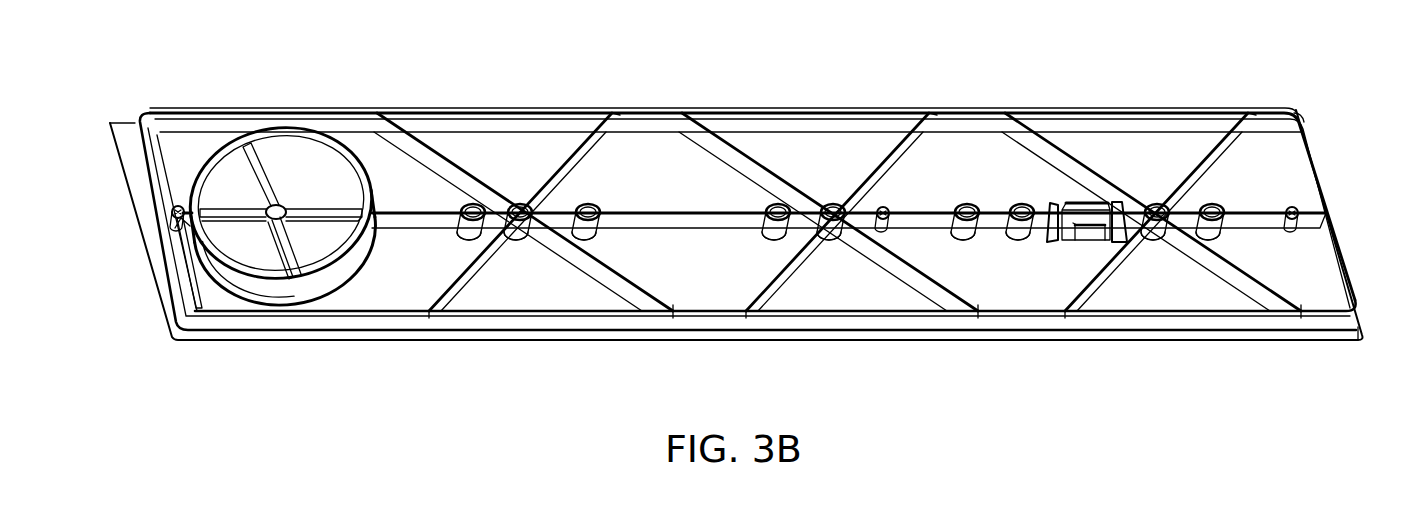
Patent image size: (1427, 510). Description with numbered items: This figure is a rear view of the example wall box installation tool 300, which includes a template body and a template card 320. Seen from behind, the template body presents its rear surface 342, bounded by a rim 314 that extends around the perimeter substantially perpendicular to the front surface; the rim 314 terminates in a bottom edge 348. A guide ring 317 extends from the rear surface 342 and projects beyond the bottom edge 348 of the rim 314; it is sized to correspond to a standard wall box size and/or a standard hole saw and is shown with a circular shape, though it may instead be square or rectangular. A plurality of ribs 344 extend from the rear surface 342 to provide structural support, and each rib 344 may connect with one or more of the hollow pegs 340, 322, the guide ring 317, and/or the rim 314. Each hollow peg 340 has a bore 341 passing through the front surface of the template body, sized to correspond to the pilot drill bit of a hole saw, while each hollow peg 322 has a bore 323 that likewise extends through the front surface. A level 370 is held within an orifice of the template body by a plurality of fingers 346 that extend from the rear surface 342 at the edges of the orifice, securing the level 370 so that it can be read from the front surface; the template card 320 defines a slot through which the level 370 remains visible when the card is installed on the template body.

The wall box installation tool 300 is at (100, 90).
The rim 314 is at (1317, 322).
The guide ring 317 is at (292, 292).
The template card 320 is at (417, 358).
The hollow pegs 322 is at (200, 340).
The bore 323 is at (177, 205).
The hollow pegs 340 is at (582, 238).
The bore 341 is at (587, 203).
The rear surface 342 is at (647, 147).
The ribs 344 is at (422, 160).
The fingers 346 is at (1087, 243).
The bottom edge 348 is at (342, 110).
The level 370 is at (1066, 203).